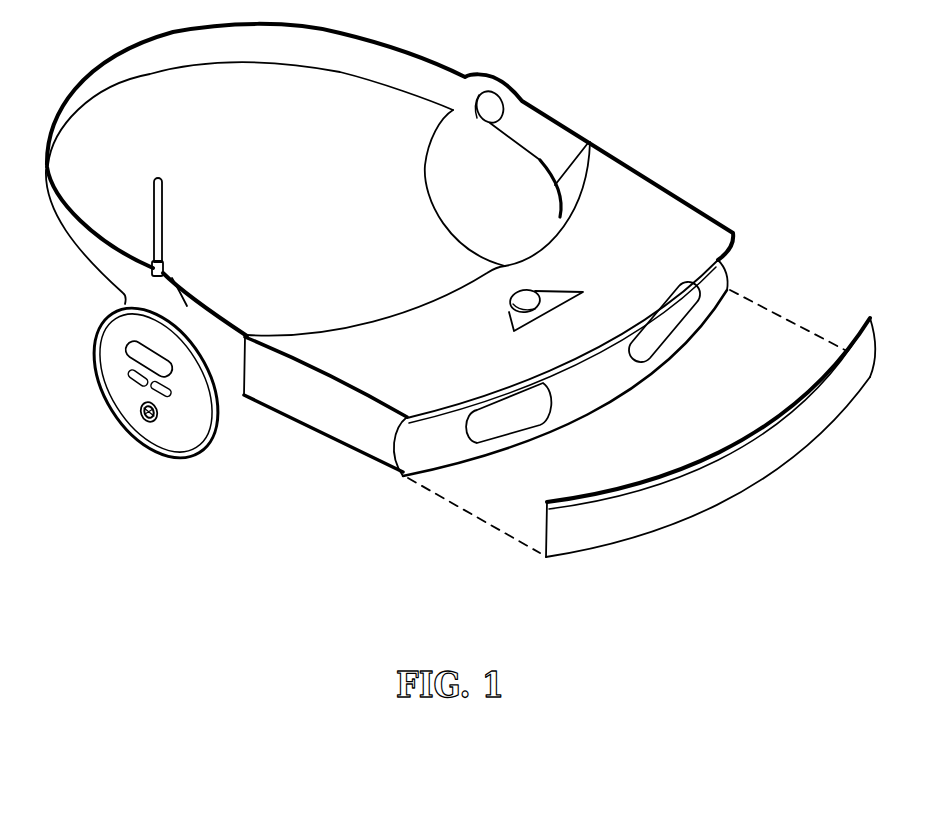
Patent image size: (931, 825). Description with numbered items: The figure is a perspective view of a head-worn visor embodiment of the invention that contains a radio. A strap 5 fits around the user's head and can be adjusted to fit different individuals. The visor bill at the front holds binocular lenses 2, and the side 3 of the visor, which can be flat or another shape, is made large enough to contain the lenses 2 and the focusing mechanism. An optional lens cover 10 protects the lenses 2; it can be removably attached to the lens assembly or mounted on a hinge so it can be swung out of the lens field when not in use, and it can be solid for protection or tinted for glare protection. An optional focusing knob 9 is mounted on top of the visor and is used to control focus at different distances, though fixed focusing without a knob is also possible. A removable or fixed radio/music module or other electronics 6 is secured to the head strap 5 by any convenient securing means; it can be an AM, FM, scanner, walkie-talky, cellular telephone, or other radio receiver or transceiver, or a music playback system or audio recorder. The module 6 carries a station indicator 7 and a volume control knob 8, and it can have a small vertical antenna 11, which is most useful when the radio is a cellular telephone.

The binocular lenses 2 is at (665, 332).
The side of the visor 3 is at (295, 413).
The strap 5 is at (113, 59).
The radio/music module 6 is at (122, 393).
The station indicator 7 is at (127, 347).
The volume control knob 8 is at (155, 422).
The focusing knob 9 is at (517, 295).
The lens cover 10 is at (745, 473).
The vertical antenna 11 is at (162, 197).